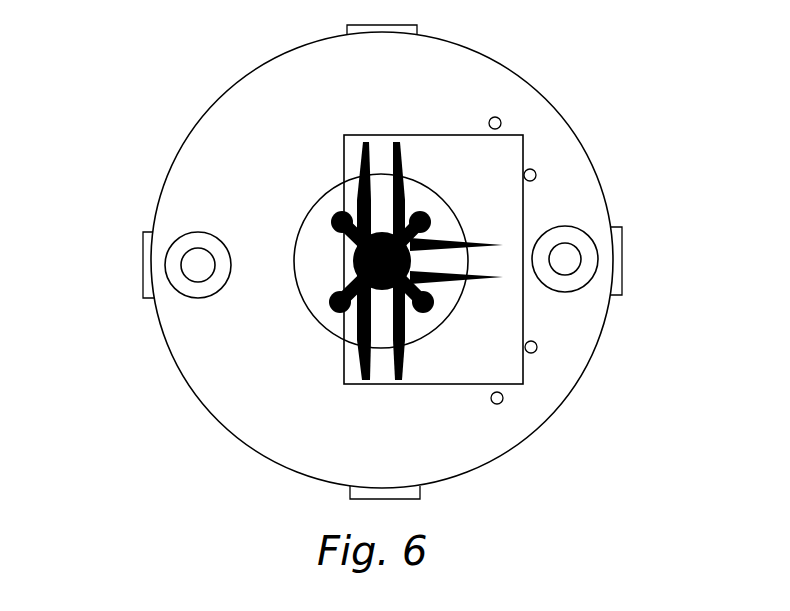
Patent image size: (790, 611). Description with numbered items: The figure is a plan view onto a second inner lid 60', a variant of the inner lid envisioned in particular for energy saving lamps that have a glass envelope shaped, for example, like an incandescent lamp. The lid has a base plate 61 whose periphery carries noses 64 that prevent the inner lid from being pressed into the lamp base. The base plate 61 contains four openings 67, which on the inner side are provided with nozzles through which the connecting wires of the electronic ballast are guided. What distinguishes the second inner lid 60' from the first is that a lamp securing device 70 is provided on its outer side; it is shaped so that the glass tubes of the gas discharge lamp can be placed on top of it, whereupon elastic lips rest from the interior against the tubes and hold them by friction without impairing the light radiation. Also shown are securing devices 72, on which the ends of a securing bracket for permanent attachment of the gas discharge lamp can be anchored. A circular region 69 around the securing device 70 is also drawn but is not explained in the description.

The second inner lid 60' is at (105, 431).
The base plate 61 is at (228, 119).
The noses 64 is at (128, 271).
The openings 67 is at (512, 118).
The central aperture 69 is at (298, 241).
The lamp securing device 70 is at (331, 205).
The securing devices 72 is at (177, 219).